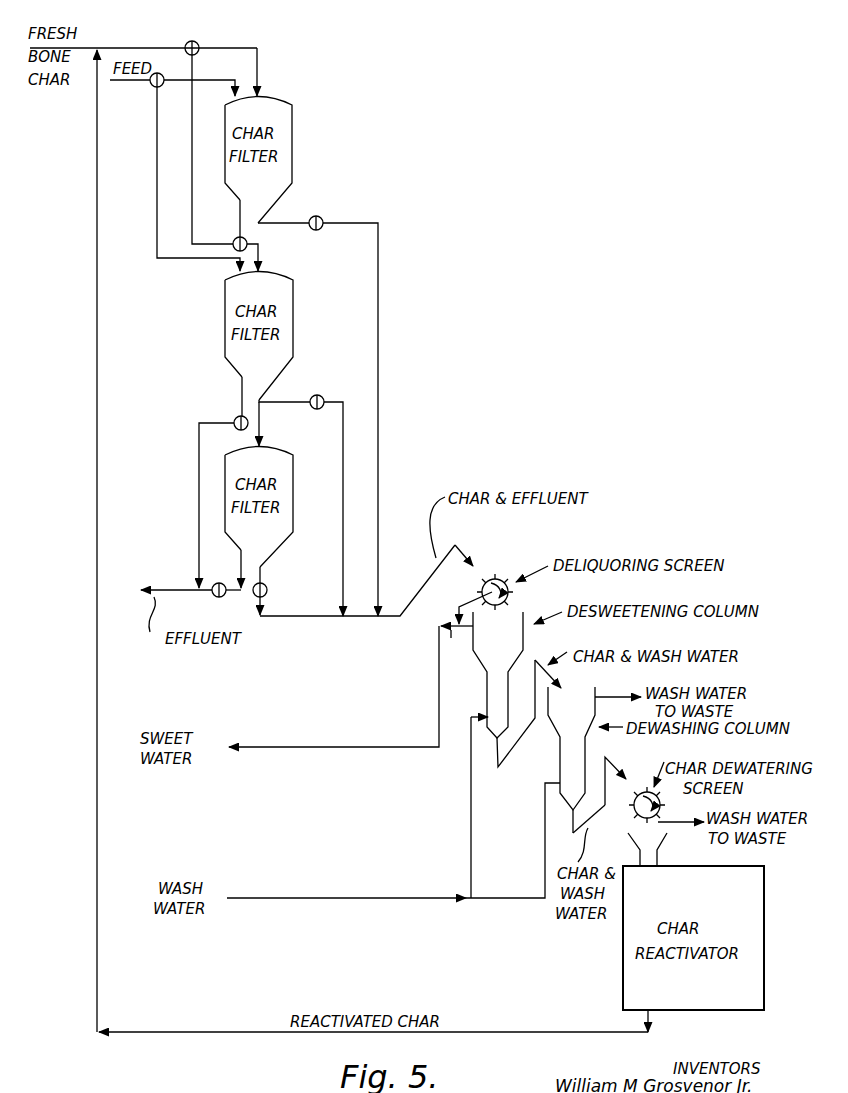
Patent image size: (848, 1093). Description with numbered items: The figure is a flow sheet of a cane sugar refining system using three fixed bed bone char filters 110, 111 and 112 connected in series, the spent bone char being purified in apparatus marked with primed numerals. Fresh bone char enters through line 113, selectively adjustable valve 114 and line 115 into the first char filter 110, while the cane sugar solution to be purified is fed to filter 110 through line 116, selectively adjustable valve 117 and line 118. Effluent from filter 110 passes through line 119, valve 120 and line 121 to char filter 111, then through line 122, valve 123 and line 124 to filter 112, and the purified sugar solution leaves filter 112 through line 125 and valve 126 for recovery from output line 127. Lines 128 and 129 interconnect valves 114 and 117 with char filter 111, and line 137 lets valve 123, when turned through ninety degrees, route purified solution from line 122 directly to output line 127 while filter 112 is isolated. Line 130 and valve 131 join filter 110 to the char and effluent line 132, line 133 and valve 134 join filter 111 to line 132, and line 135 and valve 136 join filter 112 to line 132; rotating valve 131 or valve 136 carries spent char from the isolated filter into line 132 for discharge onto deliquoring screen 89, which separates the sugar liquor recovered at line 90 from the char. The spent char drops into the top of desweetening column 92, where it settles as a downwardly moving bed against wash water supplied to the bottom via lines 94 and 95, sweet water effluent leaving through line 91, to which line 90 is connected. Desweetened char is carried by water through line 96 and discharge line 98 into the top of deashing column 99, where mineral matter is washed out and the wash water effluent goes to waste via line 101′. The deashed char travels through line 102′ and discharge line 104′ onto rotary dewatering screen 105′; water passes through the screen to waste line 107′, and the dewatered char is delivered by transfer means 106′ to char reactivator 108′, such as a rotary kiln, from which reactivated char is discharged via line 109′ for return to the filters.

The fresh bone char line 113 is at (130, 47).
The selectively adjustable valve 114 is at (194, 38).
The line 115 is at (251, 47).
The feed line 116 is at (132, 84).
The selectively adjustable valve 117 is at (160, 87).
The line 118 is at (206, 80).
The fixed bed char filter 110 is at (292, 130).
The char filter 111 is at (293, 312).
The char filter 112 is at (293, 478).
The line 119 is at (240, 213).
The valve 120 is at (248, 243).
The line 121 is at (262, 259).
The line 122 is at (242, 385).
The valve 123 is at (236, 418).
The line 124 is at (262, 428).
The line 125 is at (241, 588).
The valve 126 is at (221, 597).
The output line 127 is at (172, 590).
The line 128 is at (192, 187).
The line 129 is at (157, 204).
The line 130 is at (284, 223).
The valve 131 is at (324, 221).
The char and effluent line 132 is at (440, 571).
The line 133 is at (282, 402).
The valve 134 is at (325, 399).
The line 135 is at (262, 575).
The valve 136 is at (267, 592).
The line 137 is at (199, 507).
The deliquoring screen 89 is at (503, 578).
The line 90 is at (472, 598).
The sweet water line 91 is at (333, 747).
The desweetening column 92 is at (527, 636).
The line 94 is at (352, 903).
The line 95 is at (471, 826).
The line 96 is at (490, 750).
The discharge line 98 is at (545, 673).
The deashing column 99 is at (585, 749).
The line 101′ is at (611, 697).
The line 102′ is at (590, 823).
The discharge line 104′ is at (613, 768).
The rotary dewatering screen 105′ is at (666, 805).
The transfer means 106′ is at (632, 848).
The line 107′ is at (681, 833).
The char reactivator 108′ is at (764, 905).
The line 109′ is at (552, 1032).